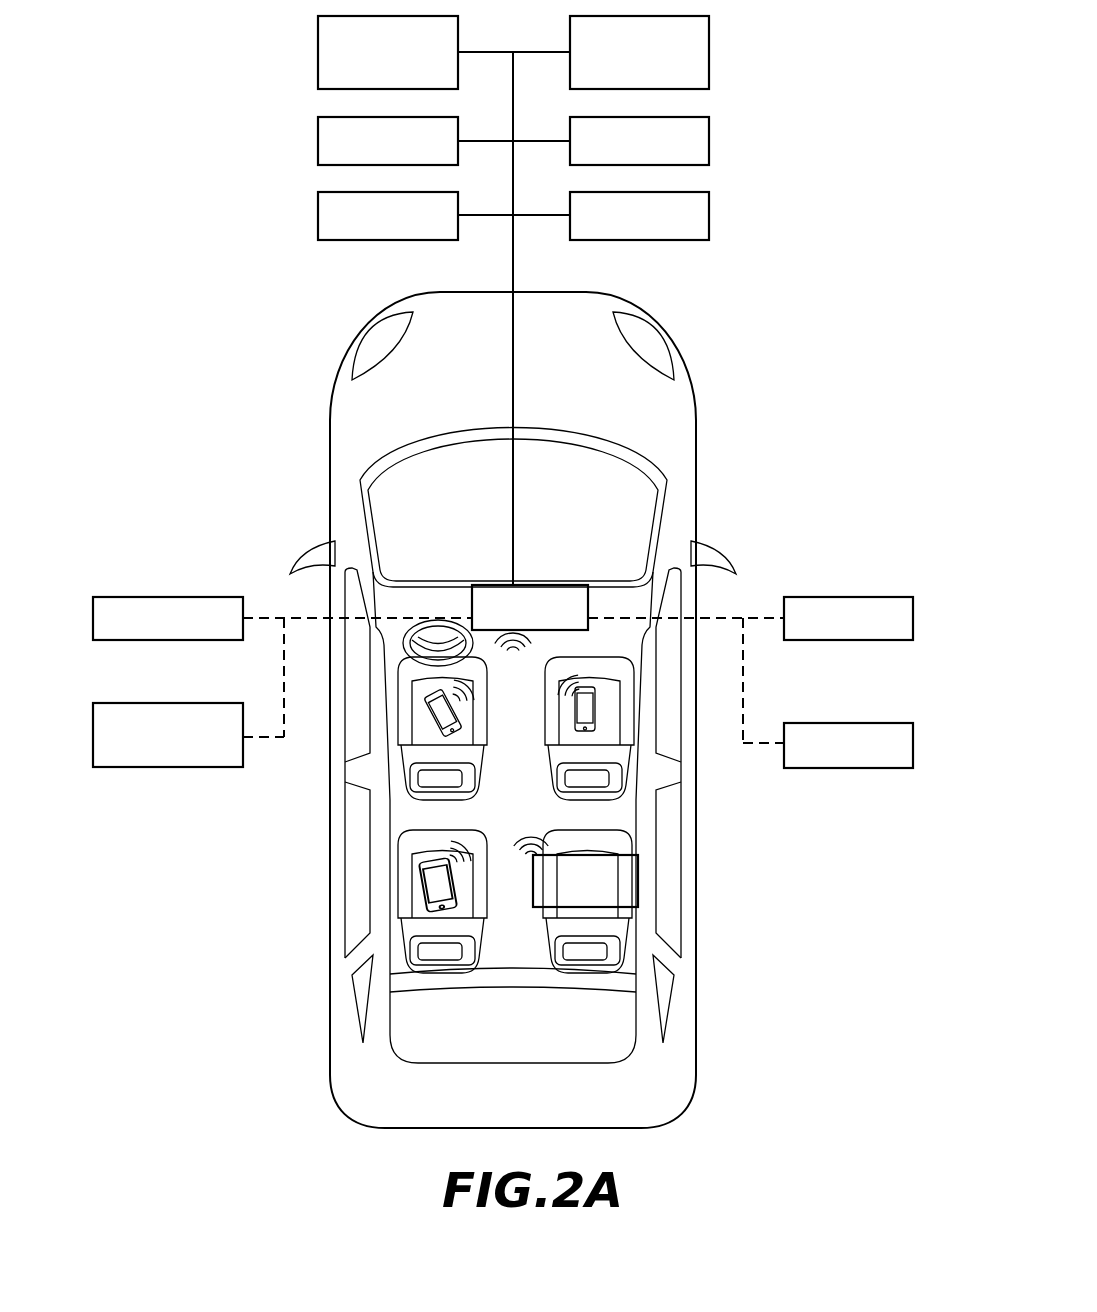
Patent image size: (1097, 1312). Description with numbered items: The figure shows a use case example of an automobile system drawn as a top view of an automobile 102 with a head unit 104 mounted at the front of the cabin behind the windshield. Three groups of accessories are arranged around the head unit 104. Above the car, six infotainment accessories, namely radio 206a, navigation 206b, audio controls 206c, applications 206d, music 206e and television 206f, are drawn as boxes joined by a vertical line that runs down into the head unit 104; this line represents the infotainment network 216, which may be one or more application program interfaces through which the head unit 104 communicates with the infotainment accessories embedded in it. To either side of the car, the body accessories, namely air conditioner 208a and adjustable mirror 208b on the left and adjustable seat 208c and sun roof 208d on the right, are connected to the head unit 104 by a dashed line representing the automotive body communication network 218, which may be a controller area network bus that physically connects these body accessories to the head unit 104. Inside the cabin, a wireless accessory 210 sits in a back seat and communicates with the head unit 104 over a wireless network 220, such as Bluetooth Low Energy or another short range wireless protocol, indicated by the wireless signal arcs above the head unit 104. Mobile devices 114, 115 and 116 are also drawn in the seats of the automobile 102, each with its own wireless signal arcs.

The automobile 102 is at (690, 398).
The head unit 104 is at (549, 585).
The mobile device 114 is at (432, 716).
The mobile device 115 is at (594, 716).
The mobile device 116 is at (435, 887).
The radio 206a is at (318, 208).
The navigation 206b is at (318, 133).
The audio controls 206c is at (318, 32).
The applications 206d is at (709, 33).
The music 206e is at (709, 133).
The television 206f is at (709, 208).
The air conditioner 208a is at (156, 703).
The adjustable mirror 208b is at (156, 597).
The adjustable seat 208c is at (849, 597).
The sun roof 208d is at (849, 723).
The wireless accessory 210 is at (628, 892).
The infotainment network 216 is at (514, 258).
The automotive body communication network 218 is at (303, 616).
The wireless network 220 is at (512, 656).